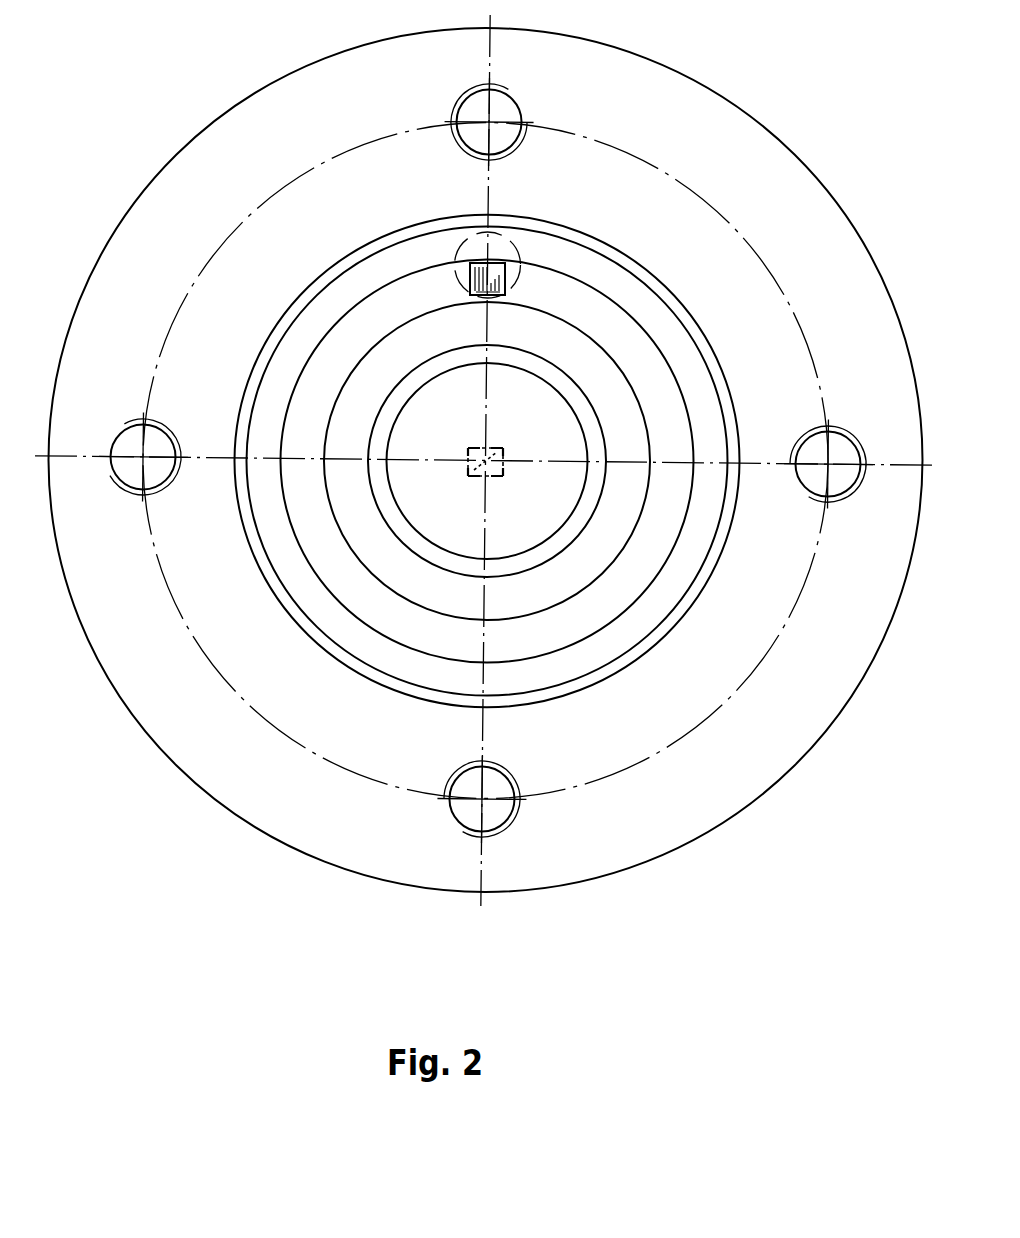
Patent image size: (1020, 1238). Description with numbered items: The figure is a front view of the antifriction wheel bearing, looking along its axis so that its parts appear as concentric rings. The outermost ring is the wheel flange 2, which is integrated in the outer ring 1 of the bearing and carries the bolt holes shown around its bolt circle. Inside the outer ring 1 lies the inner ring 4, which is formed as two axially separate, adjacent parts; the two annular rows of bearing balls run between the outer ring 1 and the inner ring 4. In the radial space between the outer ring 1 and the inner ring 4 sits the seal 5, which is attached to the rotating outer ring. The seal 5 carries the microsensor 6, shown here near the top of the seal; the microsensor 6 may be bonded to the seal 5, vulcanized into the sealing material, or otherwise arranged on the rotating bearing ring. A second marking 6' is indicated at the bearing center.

The outer ring 1 is at (353, 638).
The wheel flange 2 is at (672, 802).
The inner ring 4 is at (502, 569).
The seal 5 is at (660, 525).
The microsensor 6 is at (576, 207).
The center marking 6' is at (607, 375).